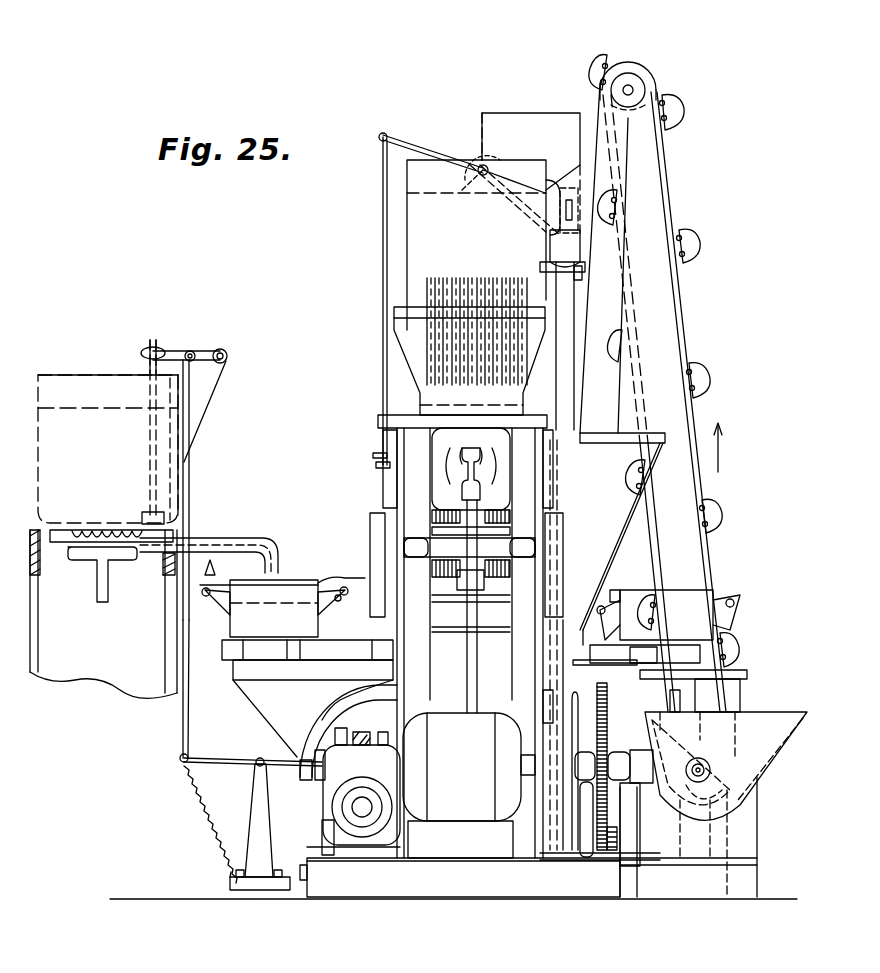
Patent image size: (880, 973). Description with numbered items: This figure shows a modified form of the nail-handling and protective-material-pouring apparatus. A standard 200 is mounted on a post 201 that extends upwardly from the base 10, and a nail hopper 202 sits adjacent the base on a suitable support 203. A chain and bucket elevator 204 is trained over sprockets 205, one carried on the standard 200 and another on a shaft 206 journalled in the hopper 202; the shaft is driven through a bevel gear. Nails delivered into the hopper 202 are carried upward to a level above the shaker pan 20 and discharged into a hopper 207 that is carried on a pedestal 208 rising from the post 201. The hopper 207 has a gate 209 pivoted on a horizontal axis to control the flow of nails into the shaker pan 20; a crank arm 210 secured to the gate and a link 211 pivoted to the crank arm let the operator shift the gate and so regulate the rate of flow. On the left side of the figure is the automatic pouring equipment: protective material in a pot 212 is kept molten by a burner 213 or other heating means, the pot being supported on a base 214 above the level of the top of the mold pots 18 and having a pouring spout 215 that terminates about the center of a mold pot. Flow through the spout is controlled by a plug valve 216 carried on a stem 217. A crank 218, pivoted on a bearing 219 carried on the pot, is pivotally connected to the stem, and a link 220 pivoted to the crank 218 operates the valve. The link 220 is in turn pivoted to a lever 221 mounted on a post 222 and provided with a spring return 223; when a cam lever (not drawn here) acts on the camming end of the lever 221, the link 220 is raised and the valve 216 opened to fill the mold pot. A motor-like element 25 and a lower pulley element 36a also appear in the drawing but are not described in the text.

The base 10 is at (340, 888).
The mold pots 18 is at (300, 625).
The shaker pan 20 is at (430, 220).
The motor 25 is at (444, 718).
The lower pulley 36a is at (645, 730).
The standard 200 is at (640, 290).
The post 201 is at (632, 562).
The nail hopper 202 is at (795, 738).
The support 203 is at (728, 875).
The chain and bucket elevator 204 is at (680, 342).
The sprockets 205 is at (648, 84).
The shaft 206 is at (740, 724).
The hopper 207 is at (483, 122).
The pedestal 208 is at (540, 283).
The gate 209 is at (465, 176).
The crank arm 210 is at (418, 147).
The link 211 is at (383, 287).
The pot 212 is at (52, 376).
The burner 213 is at (96, 560).
The base 214 is at (135, 682).
The pouring spout 215 is at (250, 533).
The plug valve 216 is at (166, 518).
The stem 217 is at (142, 366).
The crank 218 is at (203, 352).
The bearing 219 is at (206, 380).
The link 220 is at (189, 705).
The lever 221 is at (225, 760).
The post 222 is at (257, 800).
The spring return 223 is at (210, 840).